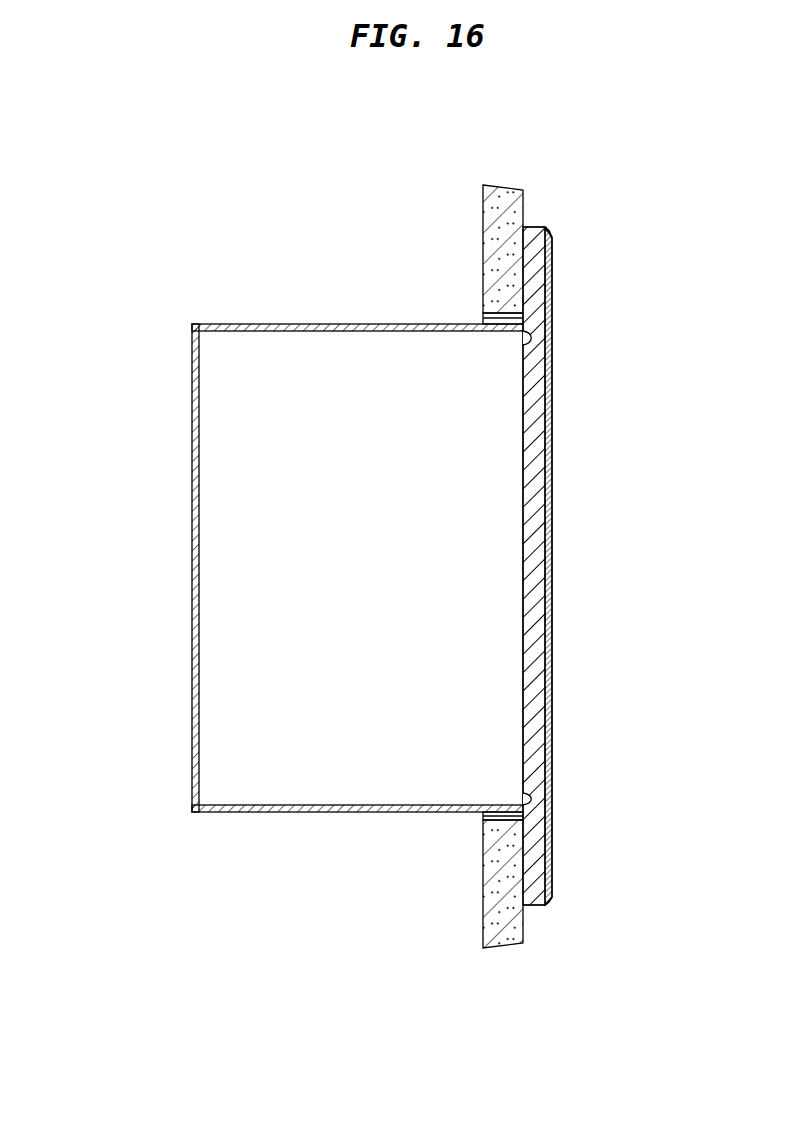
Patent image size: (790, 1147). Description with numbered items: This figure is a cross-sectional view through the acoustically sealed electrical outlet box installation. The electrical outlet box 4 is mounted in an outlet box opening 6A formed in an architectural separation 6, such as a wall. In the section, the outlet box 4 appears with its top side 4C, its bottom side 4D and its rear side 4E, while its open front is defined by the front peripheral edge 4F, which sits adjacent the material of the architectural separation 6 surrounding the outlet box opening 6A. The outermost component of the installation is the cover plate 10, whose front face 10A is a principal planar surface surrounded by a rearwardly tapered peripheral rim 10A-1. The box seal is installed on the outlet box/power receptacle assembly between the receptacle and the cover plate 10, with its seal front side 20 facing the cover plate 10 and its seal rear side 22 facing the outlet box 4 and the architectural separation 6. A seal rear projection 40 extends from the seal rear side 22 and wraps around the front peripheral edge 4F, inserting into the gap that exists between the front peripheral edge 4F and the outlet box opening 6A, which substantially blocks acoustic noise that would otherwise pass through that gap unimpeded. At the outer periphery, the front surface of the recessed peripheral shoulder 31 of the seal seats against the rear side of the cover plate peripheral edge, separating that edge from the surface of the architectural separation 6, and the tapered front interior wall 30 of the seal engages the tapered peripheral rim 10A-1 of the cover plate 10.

The electrical outlet box 4 is at (300, 564).
The top side 4C is at (250, 324).
The bottom side 4D is at (293, 812).
The rear side 4E is at (192, 480).
The front peripheral edge 4F is at (523, 338).
The architectural separation 6 is at (483, 217).
The outlet box opening 6A is at (490, 319).
The cover plate 10 is at (552, 382).
The front face 10A is at (552, 337).
The rearwardly tapered peripheral rim 10A-1 is at (548, 236).
The seal front side 20 is at (552, 512).
The seal rear side 22 is at (523, 507).
The tapered front interior wall 30 is at (552, 237).
The recessed peripheral shoulder 31 is at (545, 230).
The seal rear projection 40 is at (497, 306).